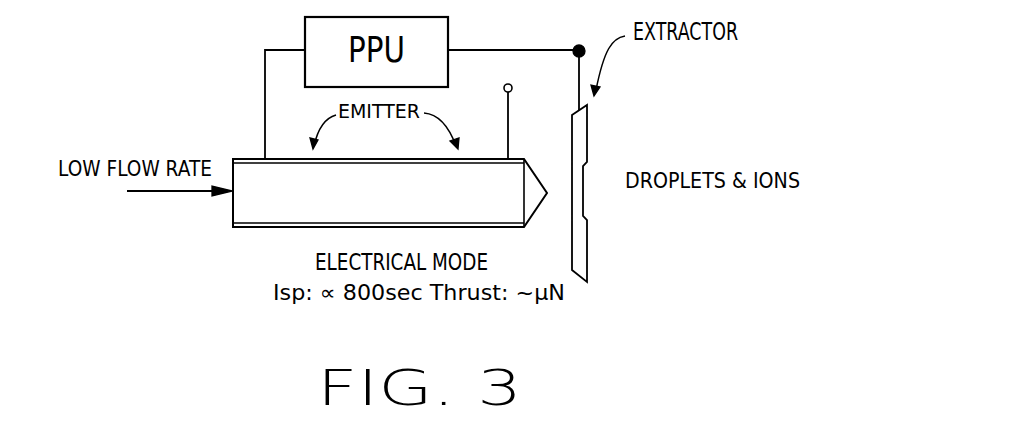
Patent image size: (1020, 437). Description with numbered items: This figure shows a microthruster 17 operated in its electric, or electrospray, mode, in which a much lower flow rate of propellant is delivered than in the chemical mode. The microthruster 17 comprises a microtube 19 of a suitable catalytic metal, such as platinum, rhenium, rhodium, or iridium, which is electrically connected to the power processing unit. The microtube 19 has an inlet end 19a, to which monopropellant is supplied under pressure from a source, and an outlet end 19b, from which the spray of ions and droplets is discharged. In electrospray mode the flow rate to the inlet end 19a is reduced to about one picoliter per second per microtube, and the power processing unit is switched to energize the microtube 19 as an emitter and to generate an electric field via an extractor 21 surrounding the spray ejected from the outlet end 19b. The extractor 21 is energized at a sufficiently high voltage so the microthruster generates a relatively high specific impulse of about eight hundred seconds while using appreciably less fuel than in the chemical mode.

The microthruster 17 is at (228, 236).
The microtube 19 is at (272, 228).
The inlet end 19a is at (225, 148).
The outlet end 19b is at (540, 150).
The extractor 21 is at (588, 148).